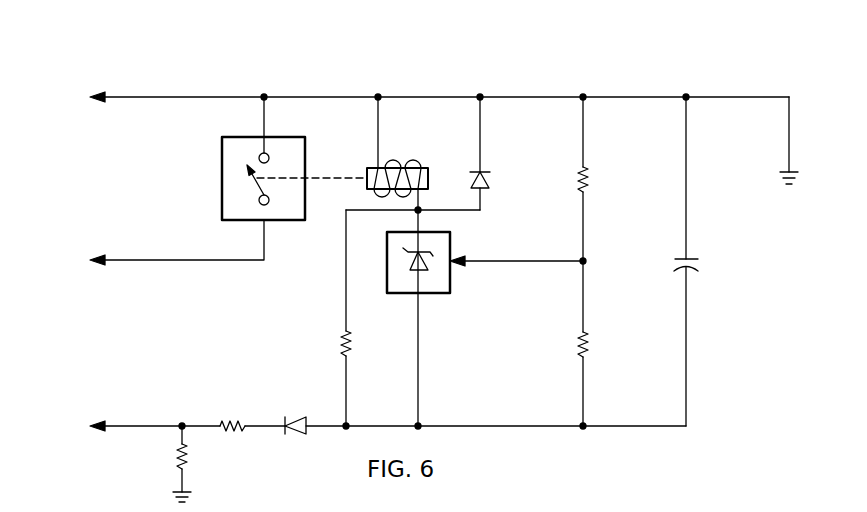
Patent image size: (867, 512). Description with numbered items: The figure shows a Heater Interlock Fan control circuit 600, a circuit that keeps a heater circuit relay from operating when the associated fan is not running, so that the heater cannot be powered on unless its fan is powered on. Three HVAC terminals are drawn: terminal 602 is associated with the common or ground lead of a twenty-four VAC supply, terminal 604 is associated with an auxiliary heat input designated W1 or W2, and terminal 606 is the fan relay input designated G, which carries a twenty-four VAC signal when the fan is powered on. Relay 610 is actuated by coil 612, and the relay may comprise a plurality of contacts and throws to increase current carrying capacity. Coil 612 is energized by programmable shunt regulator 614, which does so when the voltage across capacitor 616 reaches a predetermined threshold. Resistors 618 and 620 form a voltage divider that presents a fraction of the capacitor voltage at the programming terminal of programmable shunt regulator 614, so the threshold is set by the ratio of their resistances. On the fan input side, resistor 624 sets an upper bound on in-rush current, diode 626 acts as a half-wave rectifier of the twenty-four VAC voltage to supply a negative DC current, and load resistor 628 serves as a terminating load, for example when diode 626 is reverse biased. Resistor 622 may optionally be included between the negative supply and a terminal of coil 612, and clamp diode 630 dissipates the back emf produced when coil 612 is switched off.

The HIF control circuit 600 is at (557, 67).
The terminal 602 is at (87, 92).
The terminal 604 is at (87, 257).
The terminal 606 is at (88, 431).
The relay 610 is at (222, 178).
The coil 612 is at (410, 165).
The programmable shunt regulator 614 is at (450, 243).
The capacitor 616 is at (697, 262).
The resistor 618 is at (589, 180).
The resistor 620 is at (589, 346).
The resistor 622 is at (341, 348).
The resistor 624 is at (233, 432).
The diode 626 is at (293, 433).
The load resistor 628 is at (177, 457).
The clamp diode 630 is at (491, 176).